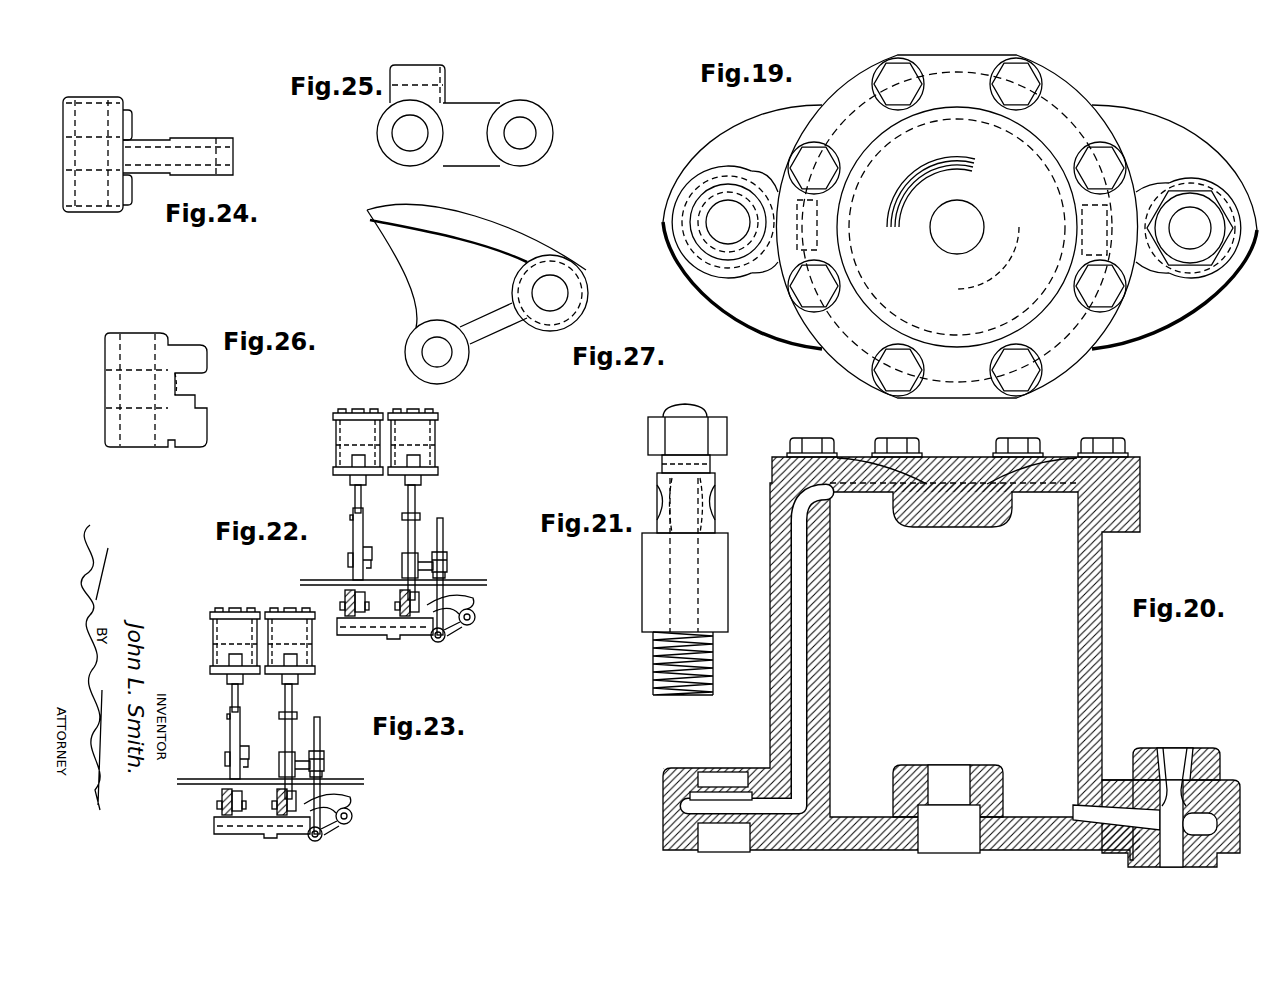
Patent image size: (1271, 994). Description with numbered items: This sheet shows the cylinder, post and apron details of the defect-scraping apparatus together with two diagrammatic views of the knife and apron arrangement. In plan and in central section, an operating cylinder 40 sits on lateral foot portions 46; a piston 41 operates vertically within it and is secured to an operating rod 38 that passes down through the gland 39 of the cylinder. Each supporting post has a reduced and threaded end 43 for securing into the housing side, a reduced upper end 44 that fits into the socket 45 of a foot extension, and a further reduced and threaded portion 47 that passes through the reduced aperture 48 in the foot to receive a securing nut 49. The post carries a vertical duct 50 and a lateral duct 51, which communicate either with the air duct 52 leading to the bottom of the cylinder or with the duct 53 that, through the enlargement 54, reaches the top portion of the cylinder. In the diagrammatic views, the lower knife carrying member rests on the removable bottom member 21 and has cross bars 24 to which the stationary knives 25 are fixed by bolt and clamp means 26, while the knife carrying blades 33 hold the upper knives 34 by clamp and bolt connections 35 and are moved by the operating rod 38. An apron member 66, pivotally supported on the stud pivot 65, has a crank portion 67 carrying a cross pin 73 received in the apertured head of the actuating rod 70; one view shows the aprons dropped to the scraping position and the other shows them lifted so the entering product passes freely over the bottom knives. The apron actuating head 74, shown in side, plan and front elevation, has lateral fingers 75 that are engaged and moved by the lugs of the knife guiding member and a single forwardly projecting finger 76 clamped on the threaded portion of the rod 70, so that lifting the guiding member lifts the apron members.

In FIG. 22, the removable bottom member 21 is at (357, 636).
In FIG. 23, the removable bottom member 21 is at (248, 835).
In FIG. 22, the cross bars 24 is at (345, 598).
In FIG. 23, the cross bars 24 is at (216, 799).
In FIG. 22, the knives 25 is at (400, 600).
In FIG. 23, the knives 25 is at (272, 801).
In FIG. 22, the bolt and clamp means 26 is at (381, 635).
In FIG. 23, the bolt and clamp means 26 is at (270, 817).
In FIG. 22, the knife carrying blades 33 is at (352, 537).
In FIG. 23, the knife carrying blades 33 is at (233, 743).
In FIG. 22, the upper knives 34 is at (350, 565).
In FIG. 23, the upper knives 34 is at (214, 765).
In FIG. 22, the clamp and bolt connections 35 is at (368, 550).
In FIG. 23, the clamp and bolt connections 35 is at (256, 745).
In FIG. 22, the operating rod 38 is at (355, 493).
In FIG. 23, the operating rod 38 is at (220, 698).
In FIG. 20, the gland 39 is at (968, 830).
In FIG. 19, the operating cylinder 40 is at (1050, 347).
In FIG. 22, the operating cylinder 40 is at (345, 437).
In FIG. 23, the operating cylinder 40 is at (220, 646).
In FIG. 20, the piston 41 is at (1096, 684).
In FIG. 21, the piston 41 is at (650, 590).
In FIG. 21, the reduced and threaded end 43 is at (652, 662).
In FIG. 21, the reduced upper end 44 is at (710, 522).
In FIG. 19, the socket 45 is at (712, 265).
In FIG. 20, the socket 45 is at (700, 836).
In FIG. 19, the foot portions 46 is at (710, 287).
In FIG. 20, the foot portions 46 is at (1118, 780).
In FIG. 23, the foot portions 46 is at (202, 676).
In FIG. 19, the further reduced and threaded portion 47 is at (1197, 240).
In FIG. 21, the further reduced and threaded portion 47 is at (712, 467).
In FIG. 19, the reduced aperture 48 is at (703, 238).
In FIG. 20, the reduced aperture 48 is at (742, 757).
In FIG. 19, the securing nut 49 is at (1215, 205).
In FIG. 20, the securing nut 49 is at (1222, 768).
In FIG. 21, the securing nut 49 is at (716, 440).
In FIG. 20, the vertical duct 50 is at (1186, 800).
In FIG. 21, the vertical duct 50 is at (700, 606).
In FIG. 20, the lateral duct 51 is at (1172, 790).
In FIG. 21, the lateral duct 51 is at (659, 507).
In FIG. 19, the air duct 52 is at (1168, 192).
In FIG. 20, the air duct 52 is at (1075, 790).
In FIG. 19, the duct 53 is at (733, 266).
In FIG. 20, the duct 53 is at (806, 588).
In FIG. 19, the enlargement 54 is at (782, 183).
In FIG. 20, the enlargement 54 is at (775, 716).
In FIG. 22, the stud pivot 65 is at (476, 620).
In FIG. 23, the stud pivot 65 is at (353, 823).
In FIG. 22, the apron member 66 is at (470, 603).
In FIG. 23, the apron member 66 is at (343, 802).
In FIG. 27, the apron member 66 is at (502, 233).
In FIG. 27, the crank portion 67 is at (458, 364).
In FIG. 22, the actuating rod 70 is at (443, 530).
In FIG. 23, the actuating rod 70 is at (333, 775).
In FIG. 22, the cross pin 73 is at (440, 641).
In FIG. 23, the cross pin 73 is at (324, 842).
In FIG. 22, the apron actuating head 74 is at (405, 565).
In FIG. 23, the apron actuating head 74 is at (282, 764).
In FIG. 24, the apron actuating head 74 is at (96, 110).
In FIG. 25, the apron actuating head 74 is at (380, 151).
In FIG. 26, the apron actuating head 74 is at (107, 354).
In FIG. 24, the lateral fingers 75 is at (122, 186).
In FIG. 25, the lateral fingers 75 is at (437, 76).
In FIG. 26, the lateral fingers 75 is at (197, 403).
In FIG. 22, the forwardly projecting finger 76 is at (447, 565).
In FIG. 23, the forwardly projecting finger 76 is at (334, 764).
In FIG. 24, the forwardly projecting finger 76 is at (218, 138).
In FIG. 25, the forwardly projecting finger 76 is at (480, 108).
In FIG. 26, the forwardly projecting finger 76 is at (107, 394).